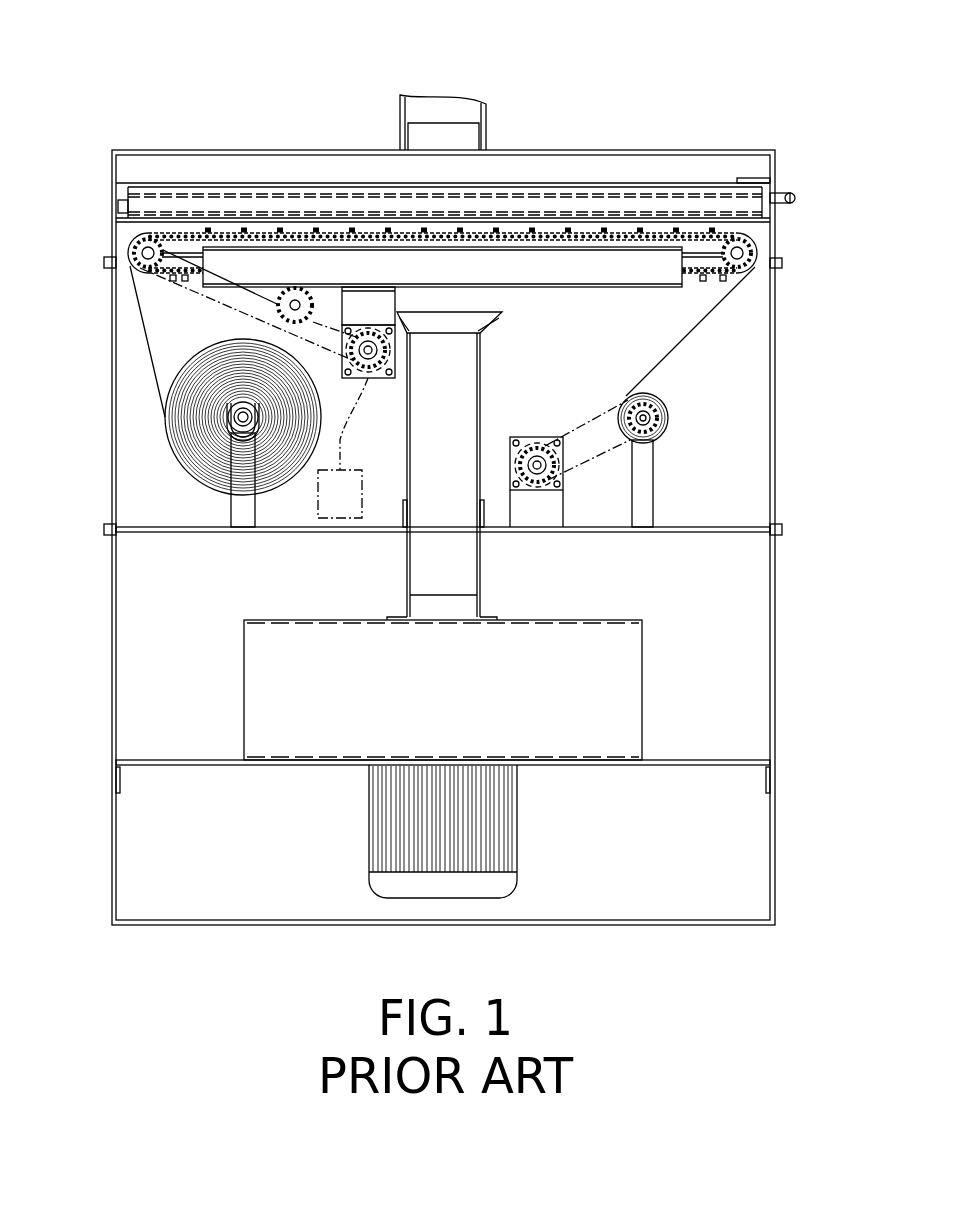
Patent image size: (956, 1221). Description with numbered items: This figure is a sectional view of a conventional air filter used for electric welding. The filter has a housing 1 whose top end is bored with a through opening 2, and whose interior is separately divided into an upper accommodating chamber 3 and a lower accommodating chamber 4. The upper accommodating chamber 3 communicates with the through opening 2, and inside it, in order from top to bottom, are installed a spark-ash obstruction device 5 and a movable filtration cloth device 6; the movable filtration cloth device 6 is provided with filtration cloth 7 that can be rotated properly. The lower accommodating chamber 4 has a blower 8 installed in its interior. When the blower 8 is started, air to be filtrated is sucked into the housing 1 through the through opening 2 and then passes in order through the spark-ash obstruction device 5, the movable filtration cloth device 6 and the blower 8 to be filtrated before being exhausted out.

The housing 1 is at (745, 325).
The through opening 2 is at (447, 137).
The upper accommodating chamber 3 is at (745, 470).
The lower accommodating chamber 4 is at (728, 683).
The spark-ash obstruction device 5 is at (652, 213).
The movable filtration cloth device 6 is at (553, 465).
The filtration cloth 7 is at (185, 428).
The blower 8 is at (258, 672).